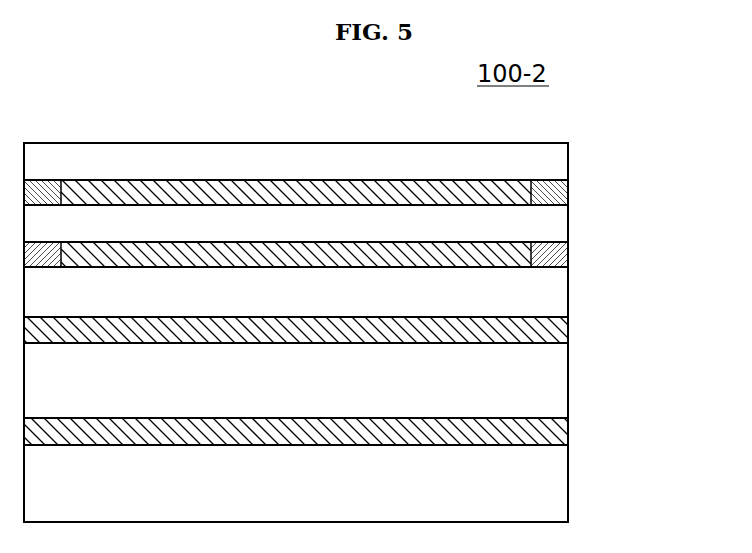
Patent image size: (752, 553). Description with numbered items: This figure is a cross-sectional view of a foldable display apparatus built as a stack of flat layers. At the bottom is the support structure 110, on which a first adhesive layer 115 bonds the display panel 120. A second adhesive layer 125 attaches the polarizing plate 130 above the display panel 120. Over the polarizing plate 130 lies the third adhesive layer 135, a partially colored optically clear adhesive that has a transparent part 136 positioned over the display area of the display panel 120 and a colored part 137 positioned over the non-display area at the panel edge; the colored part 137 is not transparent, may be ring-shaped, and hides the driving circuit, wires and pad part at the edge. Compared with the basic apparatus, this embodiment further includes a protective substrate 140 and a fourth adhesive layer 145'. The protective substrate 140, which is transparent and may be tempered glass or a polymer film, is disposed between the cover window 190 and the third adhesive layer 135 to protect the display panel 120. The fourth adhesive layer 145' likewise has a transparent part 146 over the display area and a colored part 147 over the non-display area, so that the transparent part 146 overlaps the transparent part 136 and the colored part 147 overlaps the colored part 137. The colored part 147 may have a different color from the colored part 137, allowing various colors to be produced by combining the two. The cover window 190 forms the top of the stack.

The cover window 190 is at (558, 153).
The colored part 147 is at (560, 189).
The transparent part 146 is at (569, 206).
The fourth adhesive layer 145' is at (368, 200).
The protective substrate 140 is at (556, 226).
The colored part 137 is at (560, 249).
The transparent part 136 is at (569, 268).
The third adhesive layer 135 is at (651, 245).
The polarizing plate 130 is at (556, 300).
The second adhesive layer 125 is at (560, 333).
The display panel 120 is at (558, 380).
The first adhesive layer 115 is at (560, 433).
The support structure 110 is at (558, 483).